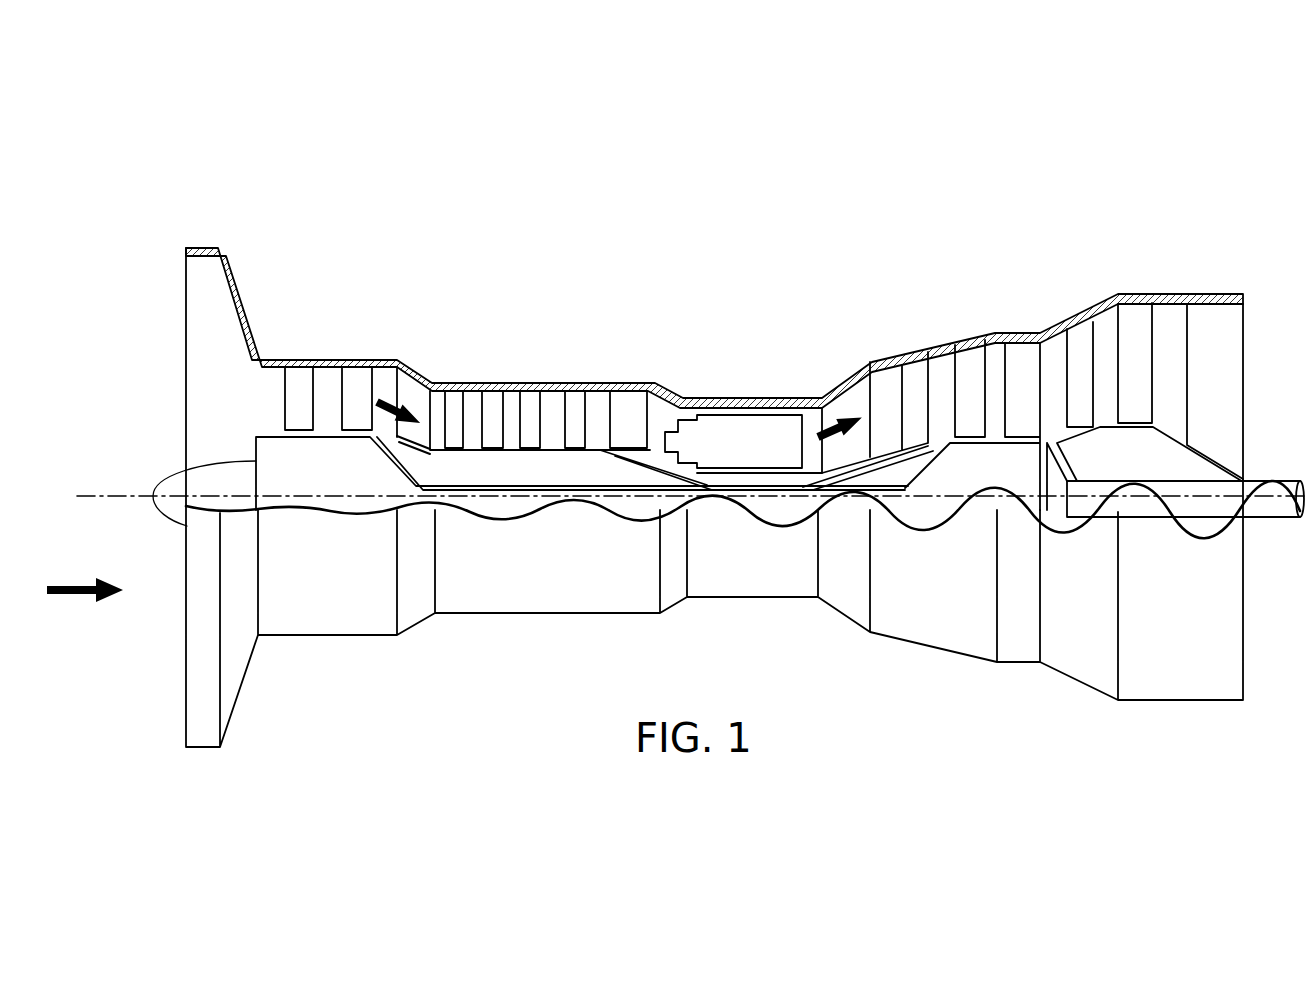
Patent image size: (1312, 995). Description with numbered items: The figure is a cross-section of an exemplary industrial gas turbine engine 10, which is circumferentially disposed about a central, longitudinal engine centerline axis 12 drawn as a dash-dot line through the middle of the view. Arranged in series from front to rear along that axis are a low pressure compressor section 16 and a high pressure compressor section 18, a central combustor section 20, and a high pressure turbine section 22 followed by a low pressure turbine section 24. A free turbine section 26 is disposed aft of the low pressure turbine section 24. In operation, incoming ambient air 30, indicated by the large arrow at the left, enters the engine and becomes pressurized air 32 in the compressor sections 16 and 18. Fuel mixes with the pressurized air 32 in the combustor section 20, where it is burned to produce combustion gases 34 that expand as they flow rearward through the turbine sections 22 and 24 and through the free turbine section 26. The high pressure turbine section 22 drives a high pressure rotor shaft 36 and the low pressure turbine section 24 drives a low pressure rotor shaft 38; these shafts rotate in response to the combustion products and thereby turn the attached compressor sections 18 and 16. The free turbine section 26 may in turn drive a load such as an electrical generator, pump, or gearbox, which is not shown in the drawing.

The industrial gas turbine engine 10 is at (820, 243).
The engine centerline axis 12 is at (120, 494).
The low pressure compressor section 16 is at (321, 340).
The high pressure compressor section 18 is at (567, 352).
The combustor section 20 is at (725, 427).
The high pressure turbine section 22 is at (922, 328).
The low pressure turbine section 24 is at (1033, 312).
The free turbine section 26 is at (1186, 287).
The incoming ambient air 30 is at (80, 584).
The pressurized air 32 is at (403, 398).
The combustion gases 34 is at (832, 421).
The high pressure rotor shaft 36 is at (748, 368).
The low pressure rotor shaft 38 is at (410, 473).